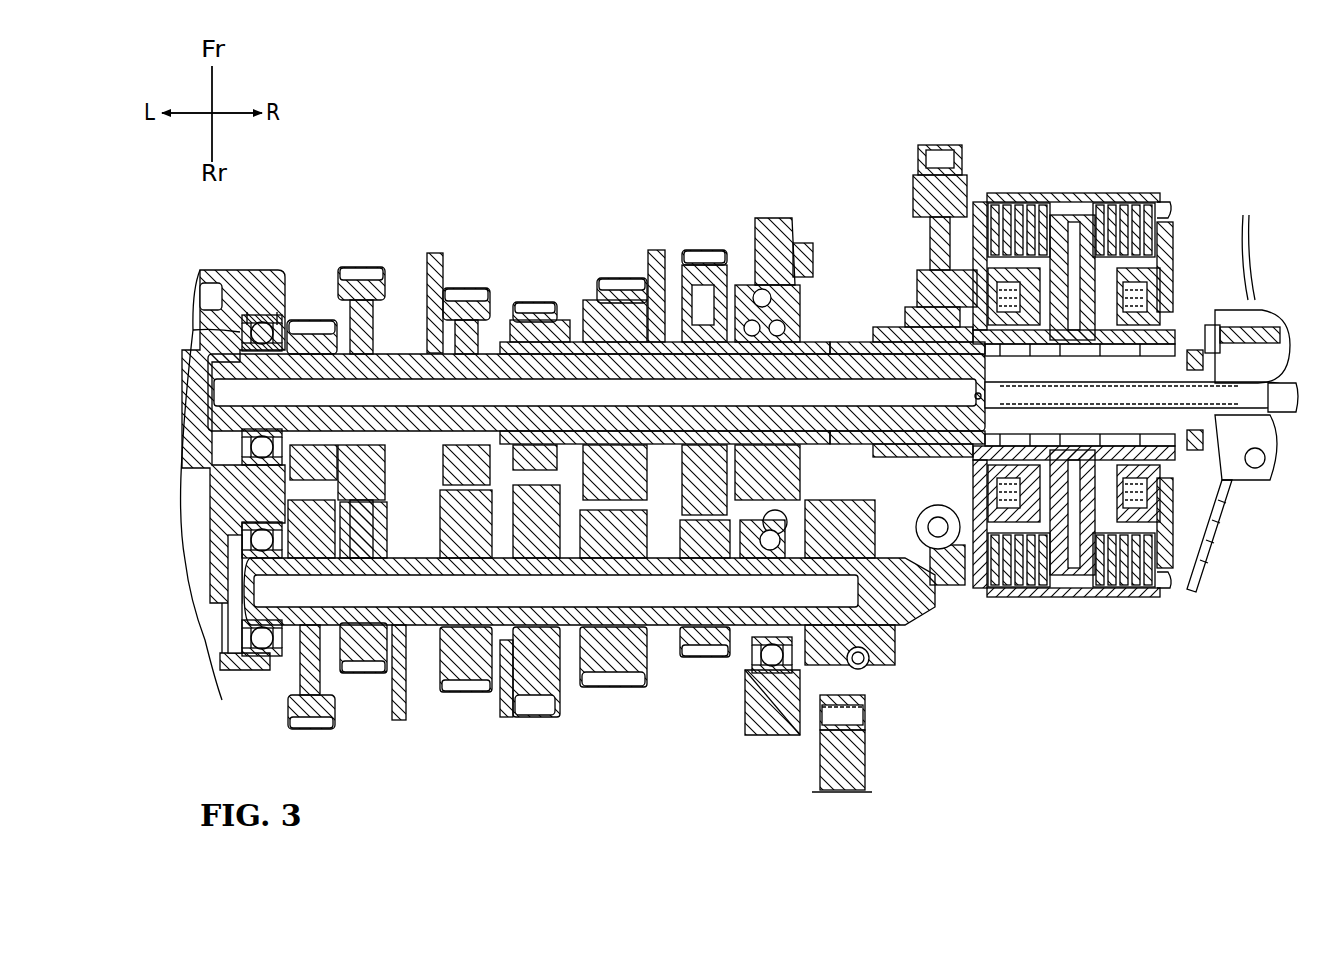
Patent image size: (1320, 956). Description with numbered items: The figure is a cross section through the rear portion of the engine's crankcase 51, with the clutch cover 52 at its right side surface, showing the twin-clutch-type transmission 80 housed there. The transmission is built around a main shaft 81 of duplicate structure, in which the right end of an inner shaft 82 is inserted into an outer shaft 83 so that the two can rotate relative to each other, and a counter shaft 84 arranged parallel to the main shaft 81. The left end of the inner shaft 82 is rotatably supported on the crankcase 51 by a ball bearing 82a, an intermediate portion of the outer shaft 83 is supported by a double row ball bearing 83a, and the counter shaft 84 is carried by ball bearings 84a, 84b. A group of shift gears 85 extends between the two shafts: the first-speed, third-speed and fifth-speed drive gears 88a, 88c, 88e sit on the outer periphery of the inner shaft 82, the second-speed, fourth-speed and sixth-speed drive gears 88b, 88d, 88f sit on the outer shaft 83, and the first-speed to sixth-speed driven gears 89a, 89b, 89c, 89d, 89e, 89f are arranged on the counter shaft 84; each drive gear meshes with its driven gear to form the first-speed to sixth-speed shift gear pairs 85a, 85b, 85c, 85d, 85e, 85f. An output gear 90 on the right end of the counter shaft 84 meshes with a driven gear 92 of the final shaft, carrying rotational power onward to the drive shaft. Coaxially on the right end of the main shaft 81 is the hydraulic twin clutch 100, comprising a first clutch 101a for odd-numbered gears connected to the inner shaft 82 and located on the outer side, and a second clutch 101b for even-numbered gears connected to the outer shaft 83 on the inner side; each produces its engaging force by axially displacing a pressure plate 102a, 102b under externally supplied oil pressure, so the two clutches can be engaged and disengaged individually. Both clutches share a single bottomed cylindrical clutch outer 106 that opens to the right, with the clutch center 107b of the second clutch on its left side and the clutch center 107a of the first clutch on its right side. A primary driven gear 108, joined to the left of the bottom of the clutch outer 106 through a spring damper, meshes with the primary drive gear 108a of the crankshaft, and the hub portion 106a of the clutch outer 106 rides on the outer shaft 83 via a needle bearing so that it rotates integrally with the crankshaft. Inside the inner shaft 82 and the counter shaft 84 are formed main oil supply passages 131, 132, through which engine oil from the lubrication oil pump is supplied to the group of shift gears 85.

The crankcase 51 is at (226, 510).
The clutch cover 52 is at (1190, 585).
The twin-clutch-type transmission 80 is at (815, 200).
The main shaft 81 is at (742, 337).
The inner shaft 82 is at (823, 350).
The ball bearing 82a is at (250, 331).
The outer shaft 83 is at (862, 353).
The double row ball bearing 83a is at (772, 270).
The counter shaft 84 is at (570, 616).
The ball bearing 84a is at (245, 638).
The ball bearing 84b is at (760, 655).
The group of shift gears 85 is at (528, 172).
The first-speed shift gear pair 85a is at (306, 316).
The second-speed shift gear pair 85b is at (540, 298).
The third-speed shift gear pair 85c is at (472, 284).
The fourth-speed shift gear pair 85d is at (614, 276).
The fifth-speed shift gear pair 85e is at (372, 262).
The sixth-speed shift gear pair 85f is at (712, 246).
The first-speed drive gear 88a is at (326, 325).
The second-speed drive gear 88b is at (524, 308).
The third-speed drive gear 88c is at (462, 287).
The fourth-speed drive gear 88d is at (630, 284).
The fifth-speed drive gear 88e is at (356, 266).
The sixth-speed drive gear 88f is at (696, 256).
The first-speed driven gear 89a is at (311, 722).
The second-speed driven gear 89b is at (533, 703).
The third-speed driven gear 89c is at (466, 688).
The fourth-speed driven gear 89d is at (620, 677).
The fifth-speed driven gear 89e is at (359, 670).
The sixth-speed driven gear 89f is at (702, 652).
The output gear 90 is at (866, 720).
The driven gear 92 is at (866, 762).
The twin clutch 100 is at (1115, 396).
The first clutch 101a is at (1167, 218).
The second clutch 101b is at (1055, 214).
The pressure plate 102a is at (1087, 572).
The pressure plate 102b is at (1052, 572).
The clutch outer 106 is at (1077, 200).
The hub portion 106a is at (955, 582).
The clutch center 107a is at (1175, 252).
The clutch center 107b is at (965, 243).
The primary driven gear 108 is at (913, 203).
The primary drive gear 108a is at (935, 148).
The main oil supply passage 131 is at (265, 393).
The main oil supply passage 132 is at (265, 594).